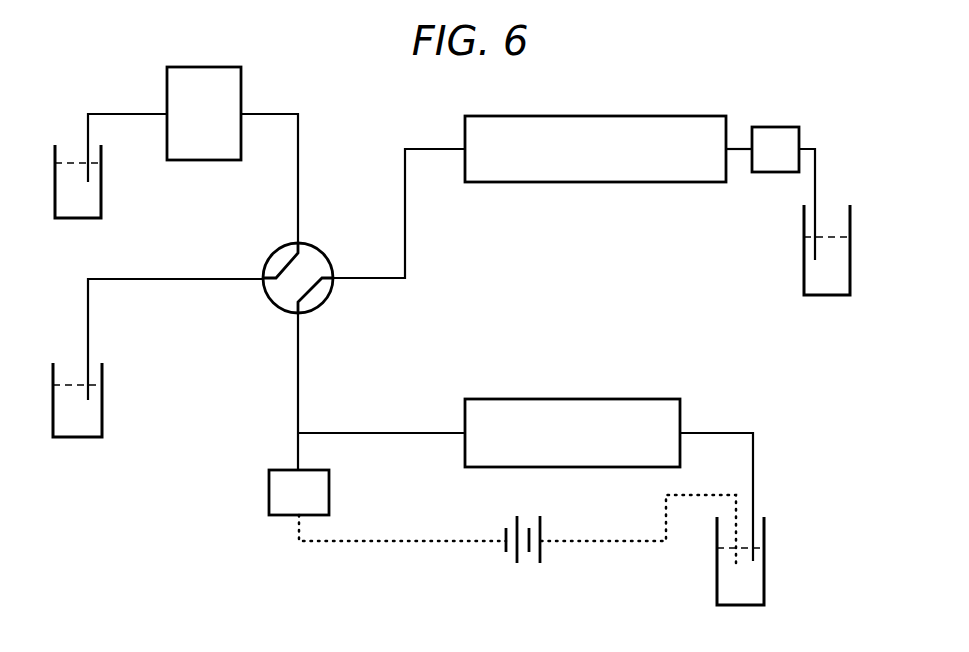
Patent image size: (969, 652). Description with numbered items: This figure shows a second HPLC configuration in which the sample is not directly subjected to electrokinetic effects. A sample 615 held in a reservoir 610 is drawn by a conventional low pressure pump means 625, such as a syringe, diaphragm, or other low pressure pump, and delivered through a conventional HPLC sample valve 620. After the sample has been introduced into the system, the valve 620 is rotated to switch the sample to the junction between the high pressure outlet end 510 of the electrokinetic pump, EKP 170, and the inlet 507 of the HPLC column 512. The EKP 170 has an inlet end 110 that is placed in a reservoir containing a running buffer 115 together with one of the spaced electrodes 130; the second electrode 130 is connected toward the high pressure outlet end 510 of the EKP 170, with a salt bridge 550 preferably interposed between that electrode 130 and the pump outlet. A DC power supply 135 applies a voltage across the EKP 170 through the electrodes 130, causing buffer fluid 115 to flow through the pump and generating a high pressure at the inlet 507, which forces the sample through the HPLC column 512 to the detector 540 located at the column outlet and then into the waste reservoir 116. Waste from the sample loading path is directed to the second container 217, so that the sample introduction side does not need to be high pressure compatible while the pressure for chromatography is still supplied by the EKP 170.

The low pressure pump means 625 is at (186, 101).
The reservoir 610 is at (102, 202).
The sample 615 is at (62, 198).
The waste reservoir 217 is at (102, 415).
The HPLC sample valve 620 is at (318, 307).
The inlet end of HPLC column 507 is at (405, 237).
The HPLC column 512 is at (672, 144).
The detector 540 is at (758, 160).
The waste reservoir 116 is at (804, 272).
The high pressure outlet end of EKP 510 is at (363, 433).
The EKP 170 is at (633, 431).
The inlet end of EKP 110 is at (753, 458).
The running buffer 115 is at (755, 588).
The salt bridge 550 is at (281, 503).
The spaced electrodes 130 is at (303, 528).
The DC power supply 135 is at (541, 550).